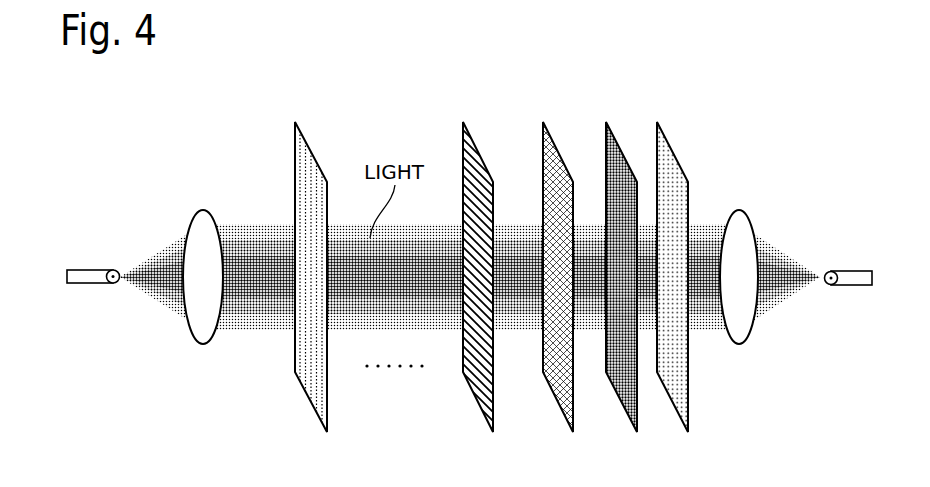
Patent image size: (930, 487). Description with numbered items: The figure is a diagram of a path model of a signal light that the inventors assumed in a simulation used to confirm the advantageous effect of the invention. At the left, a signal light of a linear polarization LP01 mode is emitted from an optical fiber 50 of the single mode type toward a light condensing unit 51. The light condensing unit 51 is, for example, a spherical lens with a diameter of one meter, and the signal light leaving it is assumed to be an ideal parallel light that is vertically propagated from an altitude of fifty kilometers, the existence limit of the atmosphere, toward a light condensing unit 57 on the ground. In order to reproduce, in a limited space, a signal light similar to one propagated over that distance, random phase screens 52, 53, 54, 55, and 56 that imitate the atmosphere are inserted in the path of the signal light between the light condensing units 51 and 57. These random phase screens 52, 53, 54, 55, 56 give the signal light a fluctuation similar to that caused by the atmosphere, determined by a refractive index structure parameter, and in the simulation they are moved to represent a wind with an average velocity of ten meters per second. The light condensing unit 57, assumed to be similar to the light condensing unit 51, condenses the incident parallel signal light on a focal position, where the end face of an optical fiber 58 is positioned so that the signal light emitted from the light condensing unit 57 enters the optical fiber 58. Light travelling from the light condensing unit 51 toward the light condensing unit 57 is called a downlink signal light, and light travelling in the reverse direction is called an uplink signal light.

The optical fiber 50 is at (85, 268).
The light condensing unit 51 is at (203, 209).
The random phase screen 52 is at (300, 135).
The random phase screen 53 is at (472, 135).
The random phase screen 54 is at (550, 135).
The random phase screen 55 is at (613, 135).
The random phase screen 56 is at (665, 135).
The light condensing unit 57 is at (740, 209).
The optical fiber 58 is at (847, 271).